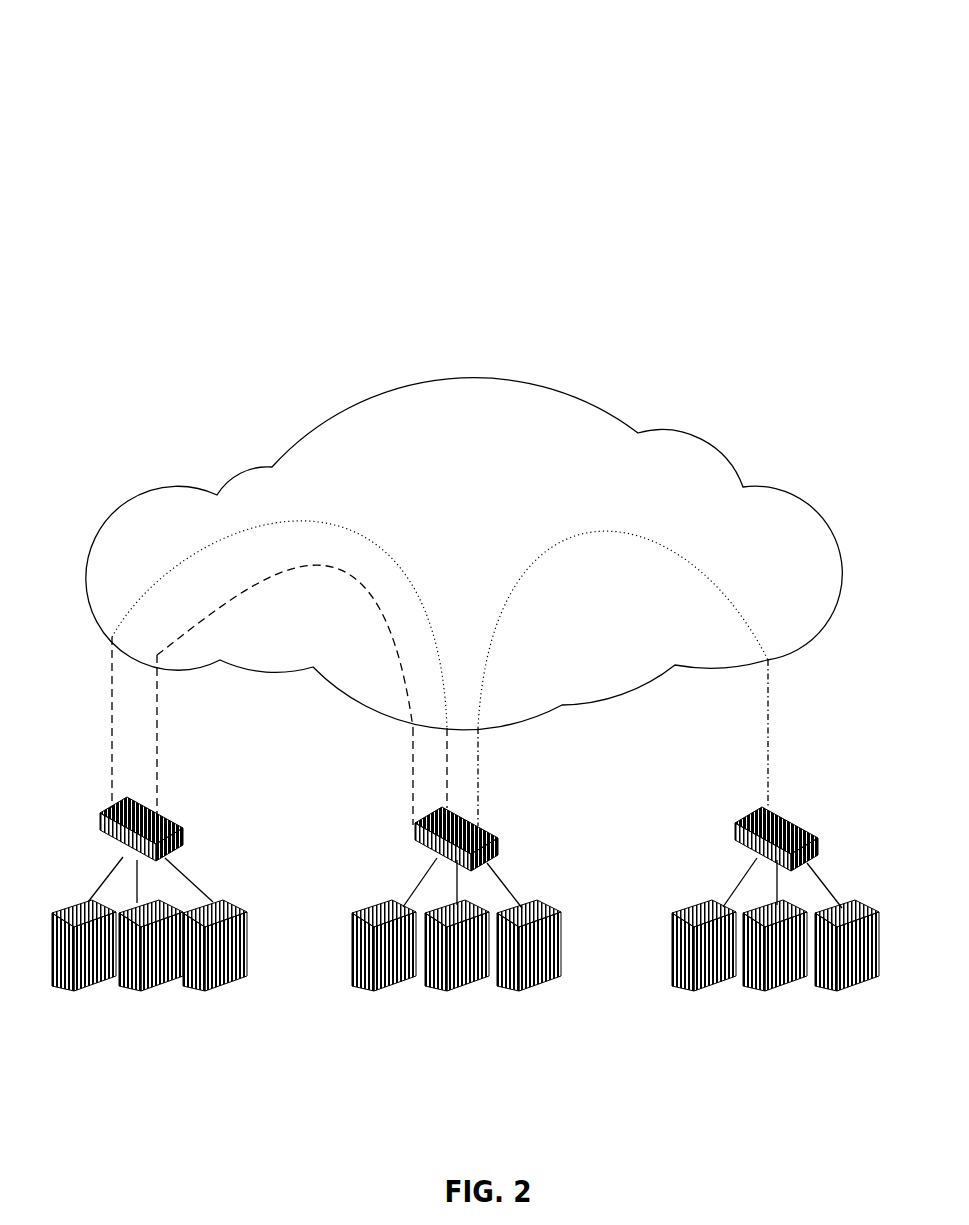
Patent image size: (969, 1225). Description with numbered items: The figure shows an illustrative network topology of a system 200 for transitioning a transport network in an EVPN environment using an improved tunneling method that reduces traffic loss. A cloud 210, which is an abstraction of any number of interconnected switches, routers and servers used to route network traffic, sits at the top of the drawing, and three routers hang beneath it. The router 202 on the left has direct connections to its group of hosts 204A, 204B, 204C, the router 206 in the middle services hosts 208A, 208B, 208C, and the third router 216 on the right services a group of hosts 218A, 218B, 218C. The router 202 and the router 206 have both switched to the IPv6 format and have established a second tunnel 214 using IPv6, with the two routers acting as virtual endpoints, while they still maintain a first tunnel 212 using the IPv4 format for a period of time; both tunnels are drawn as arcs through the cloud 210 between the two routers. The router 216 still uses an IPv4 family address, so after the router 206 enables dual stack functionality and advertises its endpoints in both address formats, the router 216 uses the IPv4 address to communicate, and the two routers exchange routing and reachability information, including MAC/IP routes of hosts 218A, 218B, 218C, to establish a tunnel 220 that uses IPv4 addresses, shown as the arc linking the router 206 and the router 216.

The system 200 is at (460, 30).
The cloud 210 is at (267, 467).
The first tunnel 212 is at (102, 738).
The second tunnel 214 is at (158, 763).
The tunnel 220 is at (770, 720).
The router 202 is at (182, 835).
The router 206 is at (498, 842).
The third router 216 is at (818, 842).
The host 204A is at (77, 986).
The host 204B is at (144, 986).
The host 204C is at (208, 986).
The host 208A is at (377, 986).
The host 208B is at (450, 986).
The host 208C is at (522, 986).
The host 218A is at (697, 986).
The host 218B is at (768, 986).
The host 218C is at (840, 986).